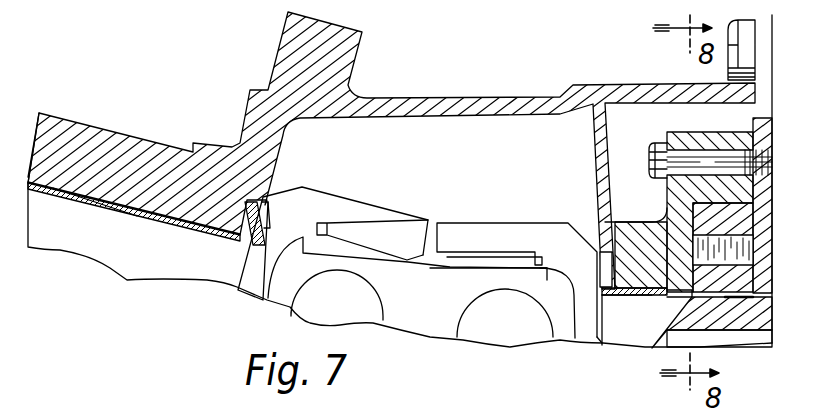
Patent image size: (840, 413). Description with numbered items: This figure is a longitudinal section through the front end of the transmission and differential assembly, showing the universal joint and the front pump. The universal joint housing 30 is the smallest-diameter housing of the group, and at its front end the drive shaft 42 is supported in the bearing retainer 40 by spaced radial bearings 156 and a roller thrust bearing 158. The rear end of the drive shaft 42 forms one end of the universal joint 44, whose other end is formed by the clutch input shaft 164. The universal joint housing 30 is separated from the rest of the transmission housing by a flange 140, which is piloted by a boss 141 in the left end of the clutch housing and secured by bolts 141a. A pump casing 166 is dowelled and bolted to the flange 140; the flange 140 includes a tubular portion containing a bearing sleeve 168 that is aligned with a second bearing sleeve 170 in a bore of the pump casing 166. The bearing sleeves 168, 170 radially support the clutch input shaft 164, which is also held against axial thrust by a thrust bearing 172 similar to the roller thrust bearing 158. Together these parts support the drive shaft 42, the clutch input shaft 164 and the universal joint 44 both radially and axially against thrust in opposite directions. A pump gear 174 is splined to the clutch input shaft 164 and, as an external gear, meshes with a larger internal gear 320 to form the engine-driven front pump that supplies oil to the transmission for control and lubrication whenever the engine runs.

The universal joint housing 30 is at (465, 103).
The bearing retainer 40 is at (137, 157).
The drive shaft 42 is at (143, 260).
The universal joint 44 is at (443, 320).
The flange 140 is at (755, 127).
The boss 141 is at (741, 50).
The bolts 141a is at (652, 157).
The radial bearings 156 is at (57, 190).
The roller thrust bearing 158 is at (240, 236).
The clutch input shaft 164 is at (617, 332).
The pump casing 166 is at (640, 230).
The bearing sleeve 168 is at (777, 297).
The second bearing sleeve 170 is at (643, 294).
The thrust bearing 172 is at (600, 265).
The pump gear 174 is at (745, 298).
The internal gear 320 is at (693, 217).